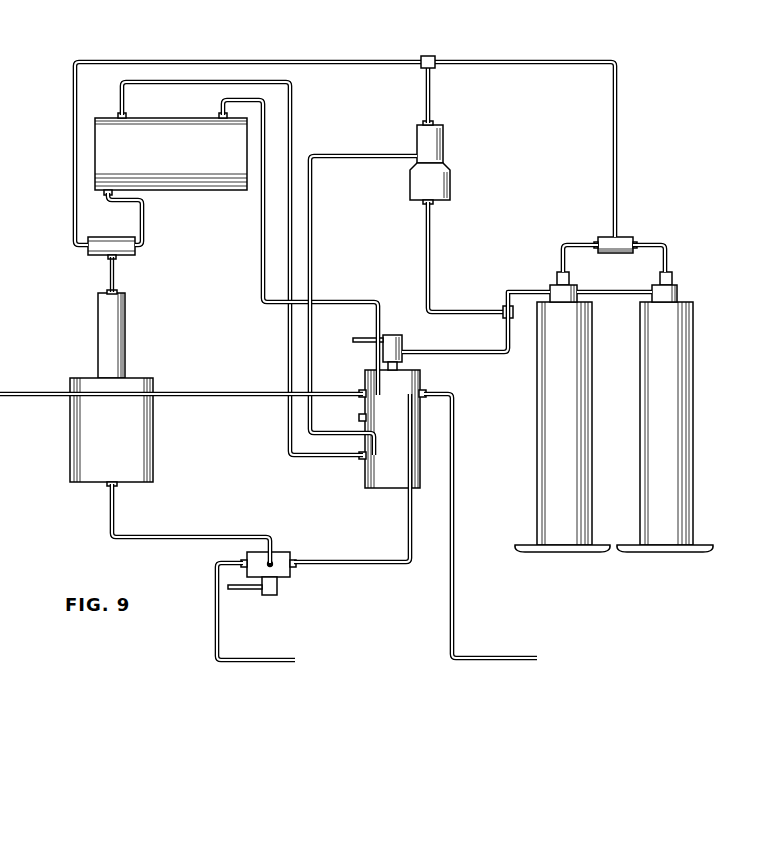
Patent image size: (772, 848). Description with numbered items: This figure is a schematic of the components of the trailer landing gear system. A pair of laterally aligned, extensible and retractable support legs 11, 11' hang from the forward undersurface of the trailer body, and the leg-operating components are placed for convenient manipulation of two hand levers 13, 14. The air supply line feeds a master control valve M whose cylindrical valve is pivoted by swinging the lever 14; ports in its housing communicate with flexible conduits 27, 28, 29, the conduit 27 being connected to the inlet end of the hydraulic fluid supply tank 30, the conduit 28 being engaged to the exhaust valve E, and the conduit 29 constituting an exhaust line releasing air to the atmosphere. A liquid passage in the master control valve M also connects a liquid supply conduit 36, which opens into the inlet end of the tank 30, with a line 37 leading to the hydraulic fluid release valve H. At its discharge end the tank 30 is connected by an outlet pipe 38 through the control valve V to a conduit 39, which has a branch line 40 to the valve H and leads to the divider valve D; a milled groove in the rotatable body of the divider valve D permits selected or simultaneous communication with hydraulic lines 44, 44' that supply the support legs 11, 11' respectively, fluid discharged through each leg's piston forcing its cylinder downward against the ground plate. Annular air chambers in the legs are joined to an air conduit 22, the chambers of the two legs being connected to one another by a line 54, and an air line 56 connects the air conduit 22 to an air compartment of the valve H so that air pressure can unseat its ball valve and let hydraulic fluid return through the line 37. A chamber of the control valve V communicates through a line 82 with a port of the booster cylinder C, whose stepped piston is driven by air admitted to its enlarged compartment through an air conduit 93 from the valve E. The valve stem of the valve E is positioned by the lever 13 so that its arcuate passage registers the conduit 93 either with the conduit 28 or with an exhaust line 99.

The support leg 11 is at (569, 412).
The support leg 11' is at (675, 412).
The hand lever 13 is at (241, 590).
The hand lever 14 is at (364, 340).
The air conduit 22 is at (502, 356).
The conduit 27 is at (262, 279).
The conduit 28 is at (360, 562).
The conduit 29 is at (455, 591).
The oil supply tank 30 is at (190, 166).
The liquid supply conduit 36 is at (173, 84).
The line 37 is at (360, 158).
The outlet pipe 38 is at (142, 226).
The conduit 39 is at (313, 60).
The branch line 40 is at (428, 92).
The hydraulic line 44 is at (580, 242).
The hydraulic line 44' is at (672, 250).
The line 54 is at (615, 292).
The air line 56 is at (464, 310).
The line 82 is at (109, 280).
The air conduit 93 is at (165, 537).
The exhaust line 99 is at (215, 625).
The booster cylinder C is at (111, 388).
The divider valve D is at (625, 243).
The exhaust valve E is at (283, 556).
The hydraulic fluid release valve H is at (430, 162).
The master control valve M is at (392, 429).
The control valve V is at (125, 252).